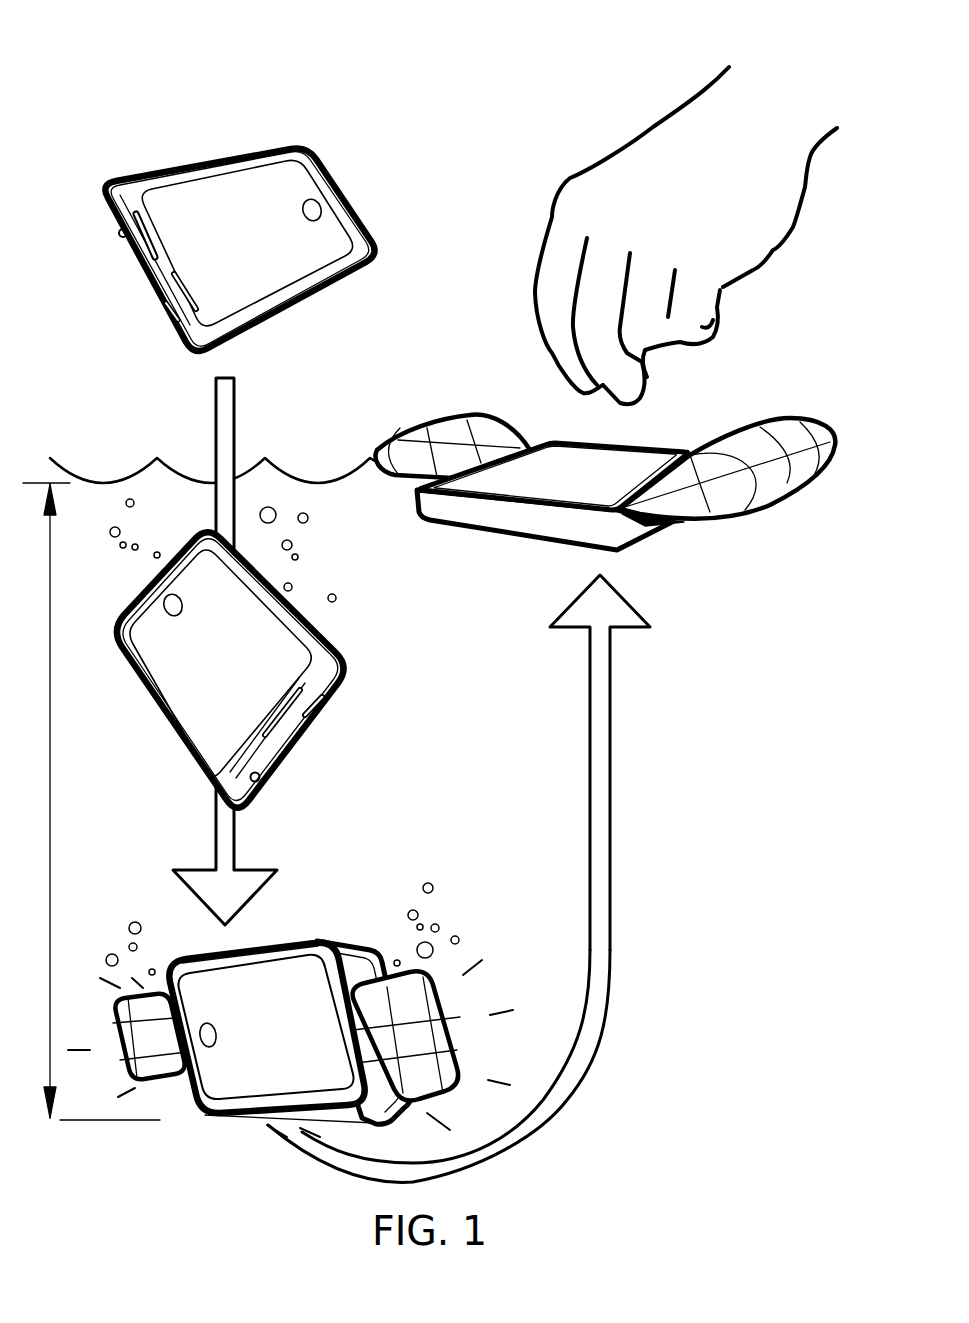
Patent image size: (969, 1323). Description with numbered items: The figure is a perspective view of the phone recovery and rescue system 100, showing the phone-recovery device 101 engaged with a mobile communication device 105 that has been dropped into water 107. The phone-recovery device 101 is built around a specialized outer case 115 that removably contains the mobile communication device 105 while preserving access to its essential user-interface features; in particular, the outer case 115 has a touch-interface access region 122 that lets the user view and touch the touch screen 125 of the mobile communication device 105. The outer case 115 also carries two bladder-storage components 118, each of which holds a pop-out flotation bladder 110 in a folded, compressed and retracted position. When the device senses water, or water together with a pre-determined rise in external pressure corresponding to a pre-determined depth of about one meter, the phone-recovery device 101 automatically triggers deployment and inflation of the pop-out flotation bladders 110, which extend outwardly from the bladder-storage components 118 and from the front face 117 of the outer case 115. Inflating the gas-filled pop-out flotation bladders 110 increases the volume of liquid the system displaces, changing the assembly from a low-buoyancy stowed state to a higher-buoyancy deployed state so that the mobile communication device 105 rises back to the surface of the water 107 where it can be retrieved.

The phone recovery and rescue system 100 is at (157, 86).
The phone-recovery device 101 is at (350, 180).
The mobile communication device 105 is at (307, 157).
The water 107 is at (147, 468).
The pop-out flotation bladder 110 is at (453, 420).
The outer case 115 is at (160, 317).
The front face 117 is at (260, 203).
The bladder-storage component 118 is at (345, 212).
The touch-interface access region 122 is at (178, 217).
The touch screen 125 is at (273, 268).